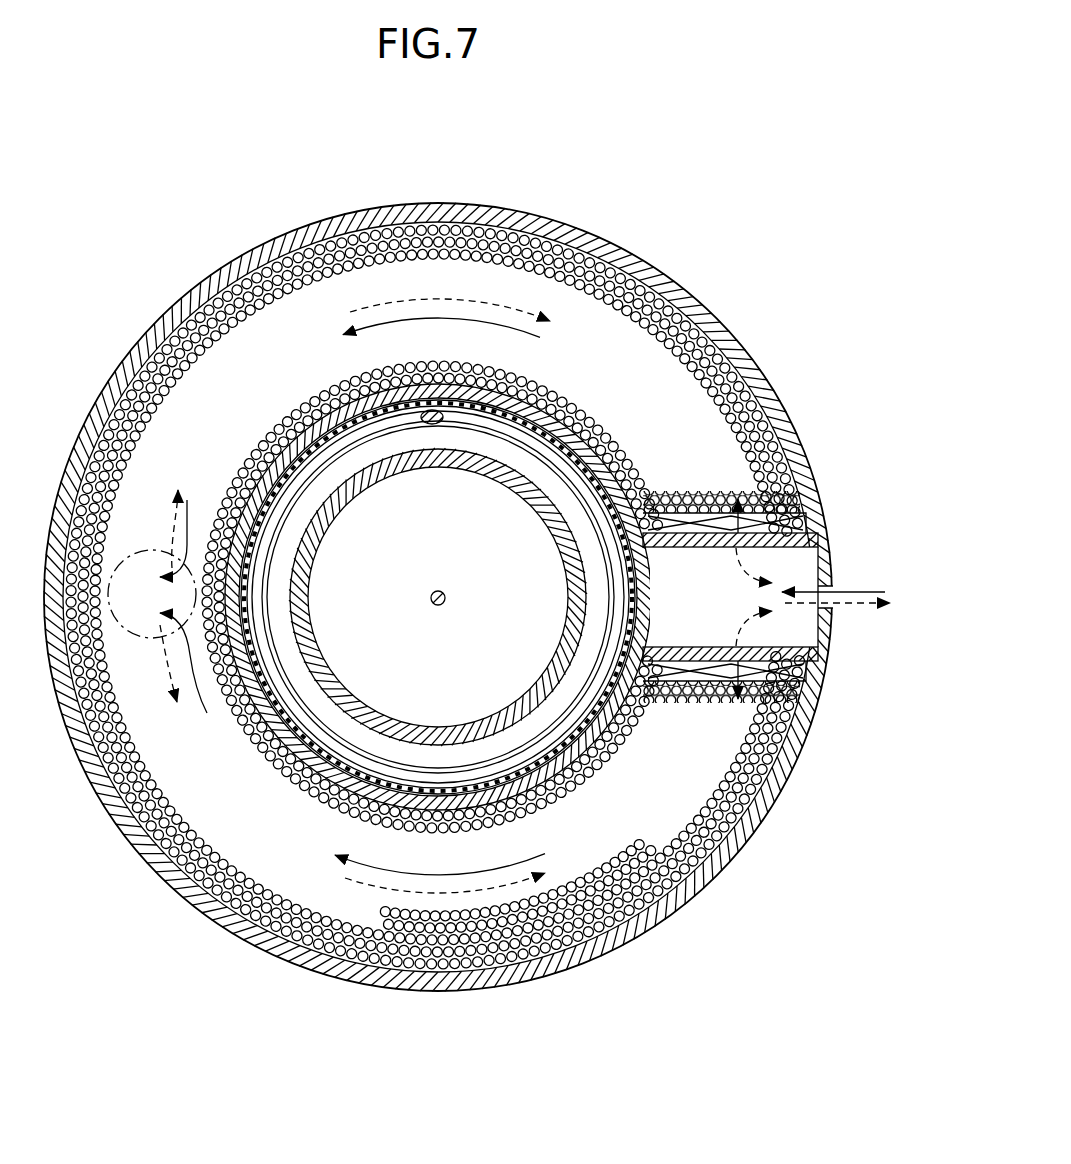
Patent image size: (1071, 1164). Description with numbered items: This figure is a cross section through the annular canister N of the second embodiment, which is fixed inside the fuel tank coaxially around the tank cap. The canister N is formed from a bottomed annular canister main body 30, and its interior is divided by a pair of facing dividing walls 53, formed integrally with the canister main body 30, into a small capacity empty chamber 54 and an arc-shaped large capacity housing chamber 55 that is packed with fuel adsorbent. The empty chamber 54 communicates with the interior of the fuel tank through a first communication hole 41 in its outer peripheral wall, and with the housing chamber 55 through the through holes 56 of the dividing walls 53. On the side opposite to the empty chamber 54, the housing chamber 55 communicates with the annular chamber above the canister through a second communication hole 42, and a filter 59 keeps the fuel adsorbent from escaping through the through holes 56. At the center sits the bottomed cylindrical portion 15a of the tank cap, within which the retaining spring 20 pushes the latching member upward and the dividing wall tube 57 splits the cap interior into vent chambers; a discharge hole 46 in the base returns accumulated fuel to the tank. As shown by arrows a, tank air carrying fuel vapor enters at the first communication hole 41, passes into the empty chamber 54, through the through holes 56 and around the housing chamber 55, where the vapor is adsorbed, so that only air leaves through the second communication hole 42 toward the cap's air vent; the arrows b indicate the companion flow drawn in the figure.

The annular canister N is at (488, 574).
The canister main body 30 is at (762, 364).
The housing chamber 55 is at (513, 236).
The dividing wall tube 57 is at (325, 672).
The retaining spring 20 is at (350, 447).
The bottomed cylindrical portion 15a is at (497, 417).
The discharge hole 46 is at (437, 607).
The empty chamber 54 is at (689, 613).
The first communication hole 41 is at (824, 584).
The dividing walls 53 is at (682, 535).
The filter 59 is at (692, 528).
The through holes 56 is at (760, 487).
The second communication hole 42 is at (143, 555).
The arrows a is at (473, 324).
The flow b is at (437, 298).